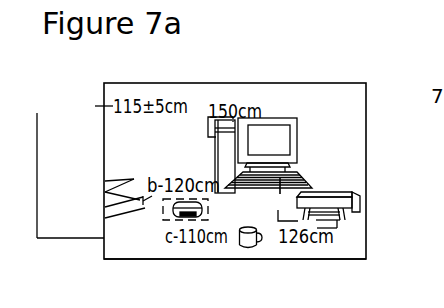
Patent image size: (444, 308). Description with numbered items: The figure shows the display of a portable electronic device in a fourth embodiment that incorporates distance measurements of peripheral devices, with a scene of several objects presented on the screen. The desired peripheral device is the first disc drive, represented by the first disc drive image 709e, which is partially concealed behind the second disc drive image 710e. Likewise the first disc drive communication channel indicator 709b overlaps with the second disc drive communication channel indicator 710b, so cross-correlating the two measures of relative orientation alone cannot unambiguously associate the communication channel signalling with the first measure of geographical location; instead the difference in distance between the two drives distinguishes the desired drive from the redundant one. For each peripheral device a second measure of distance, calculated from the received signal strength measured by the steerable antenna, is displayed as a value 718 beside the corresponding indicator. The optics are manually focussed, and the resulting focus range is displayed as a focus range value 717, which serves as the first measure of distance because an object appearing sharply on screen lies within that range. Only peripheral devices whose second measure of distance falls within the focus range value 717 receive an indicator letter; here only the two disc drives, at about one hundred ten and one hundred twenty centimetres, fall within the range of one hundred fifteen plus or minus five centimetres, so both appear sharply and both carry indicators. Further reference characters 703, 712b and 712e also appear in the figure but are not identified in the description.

The room / work area 703 is at (123, 145).
The focus range value 717 is at (104, 102).
The first disc drive communication channel indicator 709b is at (143, 201).
The first disc drive image 709e is at (145, 208).
The second disc drive image 710e is at (170, 215).
The second disc drive communication channel indicator 710b is at (171, 220).
The keyboard 712b is at (337, 183).
The printer 712e is at (348, 202).
The second measure of distance value 718 is at (340, 243).